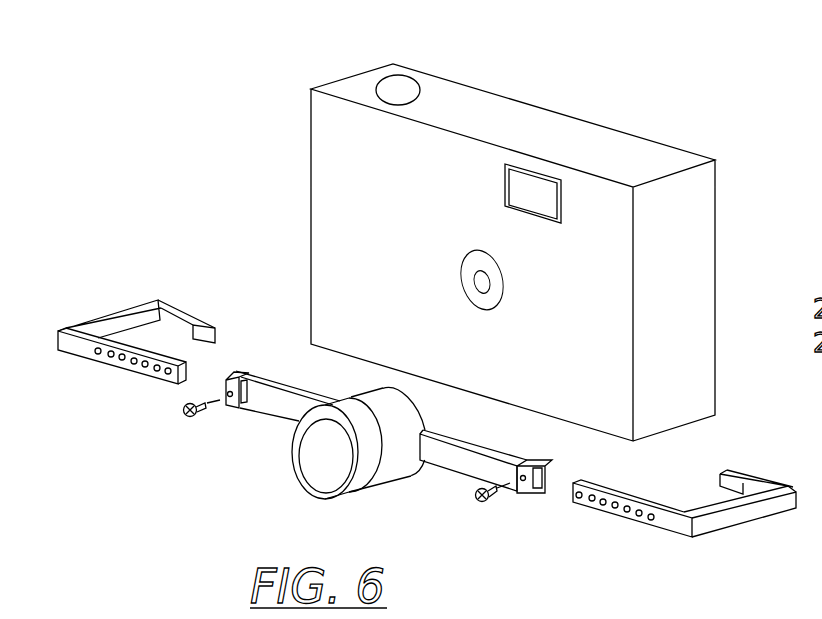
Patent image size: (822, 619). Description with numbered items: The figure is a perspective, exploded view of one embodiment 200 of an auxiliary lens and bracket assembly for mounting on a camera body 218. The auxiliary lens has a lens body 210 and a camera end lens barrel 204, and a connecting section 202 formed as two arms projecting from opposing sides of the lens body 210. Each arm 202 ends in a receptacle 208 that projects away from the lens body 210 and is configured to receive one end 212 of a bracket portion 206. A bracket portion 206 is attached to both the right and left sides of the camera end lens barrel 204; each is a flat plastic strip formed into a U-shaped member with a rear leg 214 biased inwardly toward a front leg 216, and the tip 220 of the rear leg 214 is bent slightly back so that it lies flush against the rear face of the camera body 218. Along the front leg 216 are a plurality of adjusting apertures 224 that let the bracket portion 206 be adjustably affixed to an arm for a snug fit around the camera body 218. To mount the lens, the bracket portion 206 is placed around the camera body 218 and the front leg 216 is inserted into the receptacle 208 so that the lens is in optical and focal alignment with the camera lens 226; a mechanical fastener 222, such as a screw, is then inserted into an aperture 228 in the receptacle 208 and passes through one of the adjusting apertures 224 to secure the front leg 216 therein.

The embodiment 200 is at (328, 457).
The connecting section 202 is at (295, 417).
The camera end lens barrel 204 is at (410, 414).
The bracket portion 206 is at (120, 313).
The receptacle 208 is at (367, 458).
The lens body 210 is at (330, 494).
The end of bracket portion 212 is at (440, 443).
The rear leg 214 is at (193, 294).
The front leg 216 is at (617, 423).
The camera body 218 is at (737, 262).
The tip 220 is at (212, 323).
The mechanical fastener 222 is at (475, 500).
The adjusting apertures 224 is at (131, 362).
The camera lens 226 is at (492, 282).
The aperture 228 is at (521, 474).